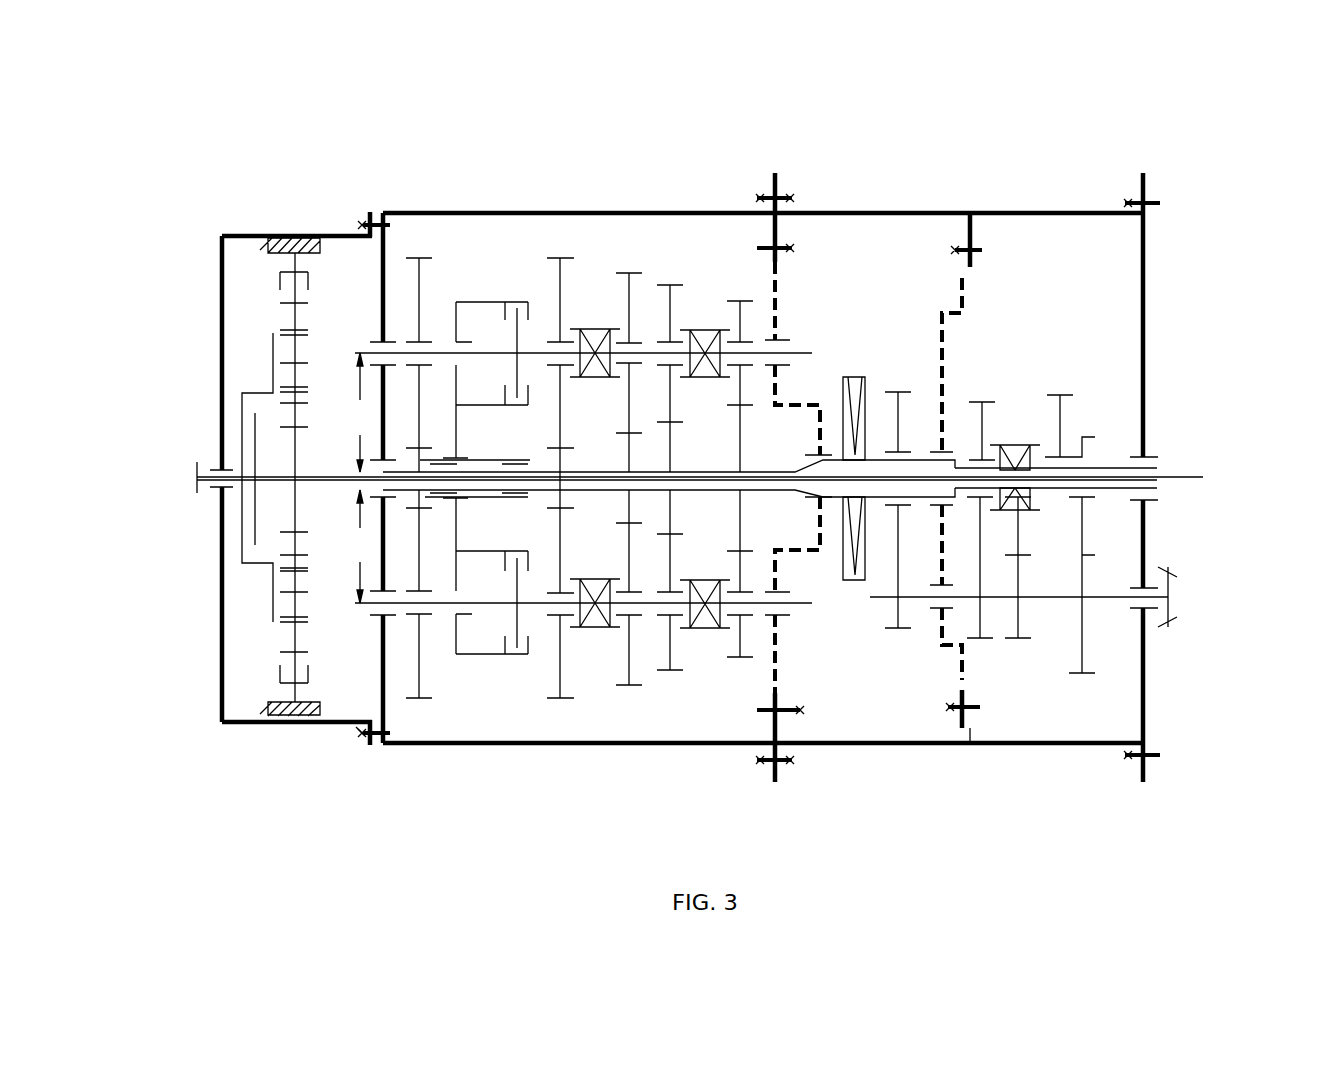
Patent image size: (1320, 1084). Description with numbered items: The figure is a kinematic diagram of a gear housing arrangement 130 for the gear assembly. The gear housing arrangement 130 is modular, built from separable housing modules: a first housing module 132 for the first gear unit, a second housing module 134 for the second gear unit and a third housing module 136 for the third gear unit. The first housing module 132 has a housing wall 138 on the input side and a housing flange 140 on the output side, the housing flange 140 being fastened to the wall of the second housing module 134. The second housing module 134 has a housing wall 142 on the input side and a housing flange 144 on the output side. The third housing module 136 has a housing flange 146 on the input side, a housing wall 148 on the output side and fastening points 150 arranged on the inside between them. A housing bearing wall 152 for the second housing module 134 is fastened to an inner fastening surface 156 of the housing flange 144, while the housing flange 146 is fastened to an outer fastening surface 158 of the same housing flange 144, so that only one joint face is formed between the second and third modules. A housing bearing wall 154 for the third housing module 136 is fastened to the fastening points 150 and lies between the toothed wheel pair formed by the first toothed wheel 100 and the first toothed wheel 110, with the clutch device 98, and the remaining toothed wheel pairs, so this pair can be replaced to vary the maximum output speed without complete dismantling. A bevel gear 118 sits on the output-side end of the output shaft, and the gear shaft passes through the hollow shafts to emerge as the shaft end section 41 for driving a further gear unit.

The gear housing arrangement 130 is at (612, 188).
The first housing module 132 is at (268, 236).
The second housing module 134 is at (432, 212).
The third housing module 136 is at (1033, 210).
The housing wall 138 is at (221, 353).
The housing flange 140 is at (358, 730).
The housing wall 142 is at (386, 682).
The housing flange 144 is at (768, 773).
The housing flange 146 is at (784, 779).
The housing wall 148 is at (1147, 683).
The fastening points 150 is at (970, 732).
The housing bearing wall 152 is at (782, 685).
The housing bearing wall 154 is at (966, 659).
The inner fastening surface 156 is at (745, 229).
The outer fastening surface 158 is at (770, 178).
The clutch device 98 is at (852, 377).
The first toothed wheel 100 is at (898, 415).
The first toothed wheel 110 is at (897, 612).
The bevel gear 118 is at (1177, 588).
The shaft end section 41 is at (1187, 478).